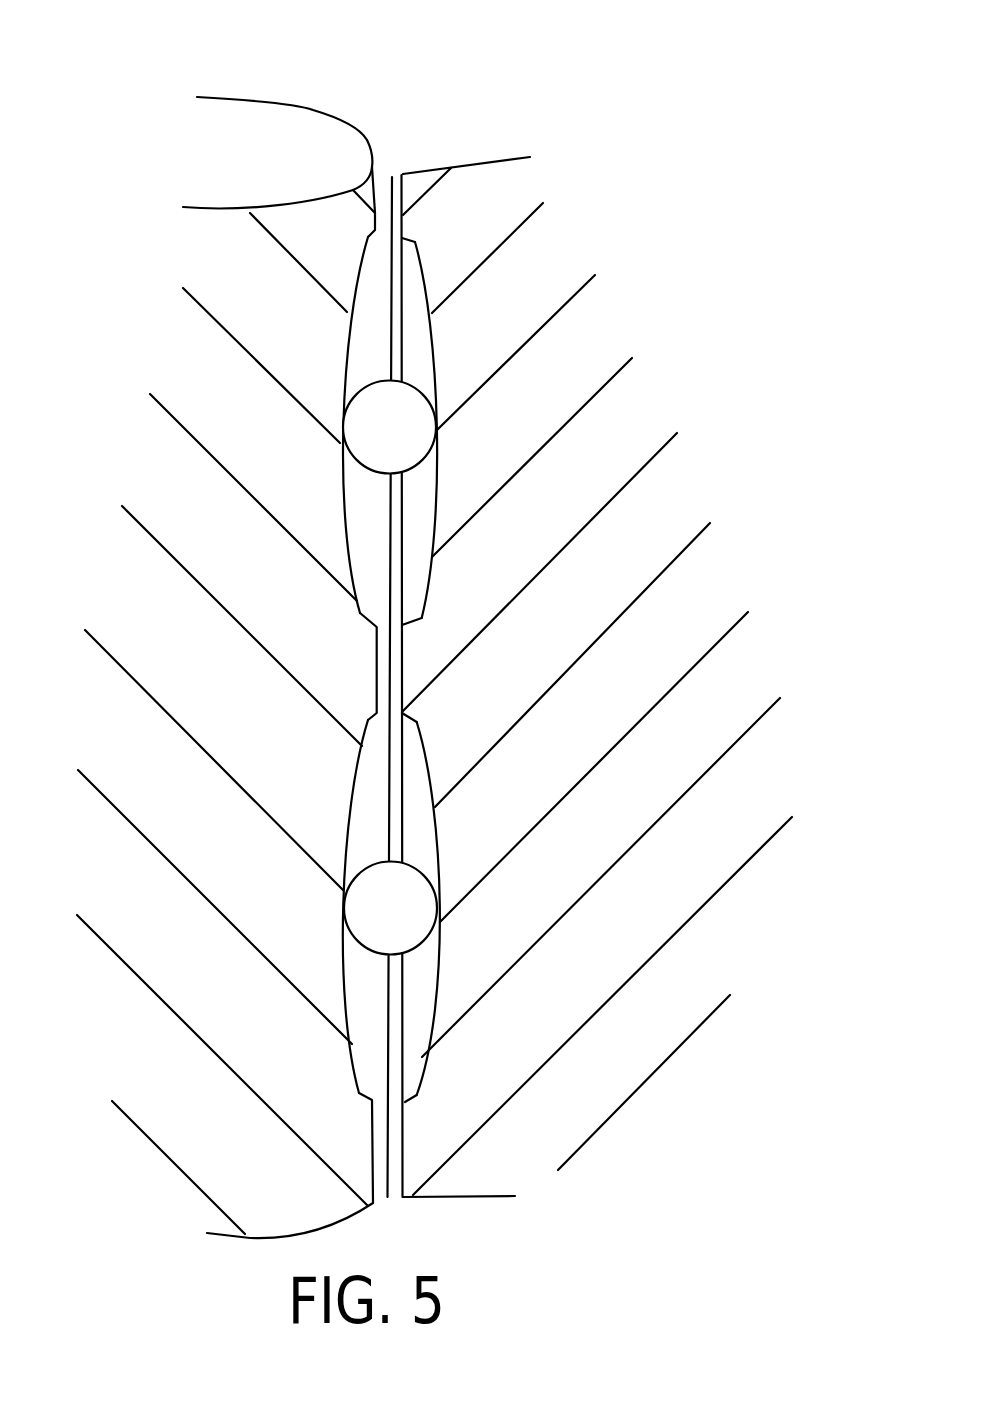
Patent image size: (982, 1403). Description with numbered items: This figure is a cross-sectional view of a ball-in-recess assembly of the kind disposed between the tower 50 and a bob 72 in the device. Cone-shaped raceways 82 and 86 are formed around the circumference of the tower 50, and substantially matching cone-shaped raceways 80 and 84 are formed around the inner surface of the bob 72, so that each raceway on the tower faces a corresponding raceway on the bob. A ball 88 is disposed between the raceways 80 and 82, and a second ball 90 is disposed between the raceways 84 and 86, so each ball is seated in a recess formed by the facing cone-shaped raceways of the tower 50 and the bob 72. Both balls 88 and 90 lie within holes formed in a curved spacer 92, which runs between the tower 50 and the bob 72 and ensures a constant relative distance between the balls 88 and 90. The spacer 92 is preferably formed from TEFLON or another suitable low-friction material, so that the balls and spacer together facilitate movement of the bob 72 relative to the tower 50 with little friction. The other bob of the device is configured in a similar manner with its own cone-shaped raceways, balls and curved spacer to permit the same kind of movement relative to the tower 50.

The tower 50 is at (312, 110).
The bob 72 is at (457, 165).
The cone-shaped raceway 80 is at (435, 352).
The cone-shaped raceway 82 is at (348, 533).
The cone-shaped raceway 84 is at (423, 740).
The cone-shaped raceway 86 is at (340, 823).
The ball 88 is at (365, 420).
The ball 90 is at (378, 910).
The curved spacer 92 is at (397, 173).